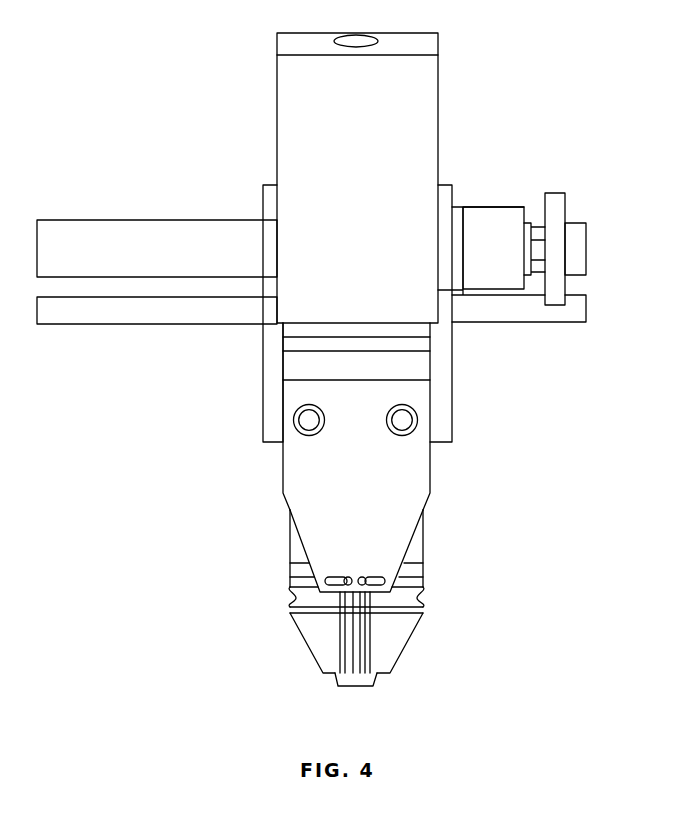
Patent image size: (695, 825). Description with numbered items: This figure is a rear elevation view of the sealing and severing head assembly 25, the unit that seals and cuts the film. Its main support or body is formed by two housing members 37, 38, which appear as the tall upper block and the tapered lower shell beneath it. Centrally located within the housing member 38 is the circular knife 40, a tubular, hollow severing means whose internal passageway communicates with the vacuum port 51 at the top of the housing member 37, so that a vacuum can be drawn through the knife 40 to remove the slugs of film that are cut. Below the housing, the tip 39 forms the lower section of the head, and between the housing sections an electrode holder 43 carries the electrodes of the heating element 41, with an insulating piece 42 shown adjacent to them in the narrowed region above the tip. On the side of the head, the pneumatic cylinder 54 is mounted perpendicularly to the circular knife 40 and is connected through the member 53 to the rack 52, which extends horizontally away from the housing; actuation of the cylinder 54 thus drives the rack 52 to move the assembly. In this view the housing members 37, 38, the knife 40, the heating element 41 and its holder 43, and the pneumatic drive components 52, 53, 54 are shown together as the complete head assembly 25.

The sealing and severing head assembly 25 is at (188, 142).
The housing member 37 is at (440, 127).
The housing member 38 is at (290, 530).
The tip 39 is at (403, 645).
The circular knife 40 is at (375, 673).
The heating element 41 is at (340, 631).
The insulating piece 42 is at (290, 572).
The electrode holder 43 is at (431, 458).
The vacuum port 51 is at (367, 35).
The rack 52 is at (120, 324).
The connecting member 53 is at (567, 283).
The pneumatic cylinder 54 is at (480, 207).